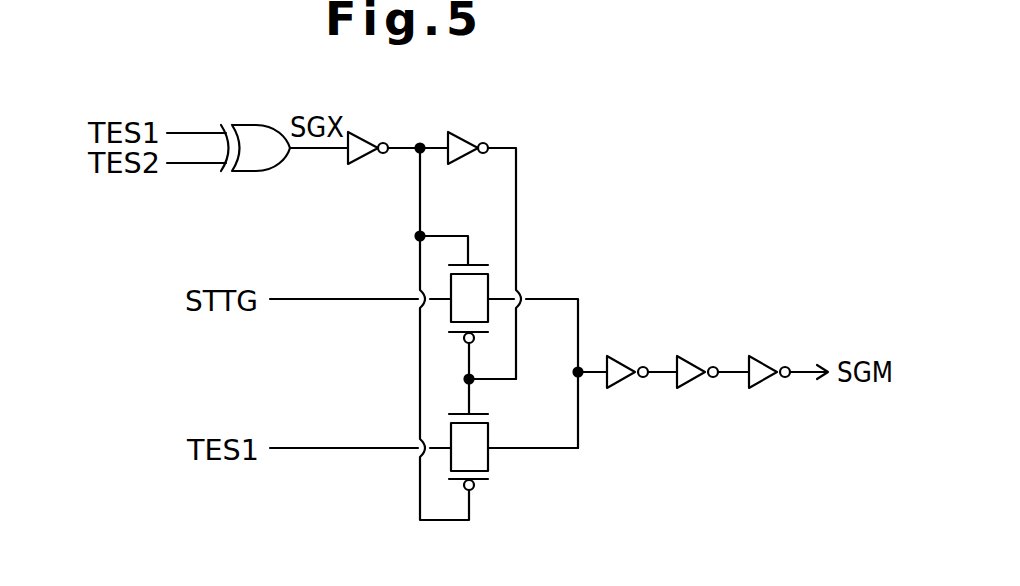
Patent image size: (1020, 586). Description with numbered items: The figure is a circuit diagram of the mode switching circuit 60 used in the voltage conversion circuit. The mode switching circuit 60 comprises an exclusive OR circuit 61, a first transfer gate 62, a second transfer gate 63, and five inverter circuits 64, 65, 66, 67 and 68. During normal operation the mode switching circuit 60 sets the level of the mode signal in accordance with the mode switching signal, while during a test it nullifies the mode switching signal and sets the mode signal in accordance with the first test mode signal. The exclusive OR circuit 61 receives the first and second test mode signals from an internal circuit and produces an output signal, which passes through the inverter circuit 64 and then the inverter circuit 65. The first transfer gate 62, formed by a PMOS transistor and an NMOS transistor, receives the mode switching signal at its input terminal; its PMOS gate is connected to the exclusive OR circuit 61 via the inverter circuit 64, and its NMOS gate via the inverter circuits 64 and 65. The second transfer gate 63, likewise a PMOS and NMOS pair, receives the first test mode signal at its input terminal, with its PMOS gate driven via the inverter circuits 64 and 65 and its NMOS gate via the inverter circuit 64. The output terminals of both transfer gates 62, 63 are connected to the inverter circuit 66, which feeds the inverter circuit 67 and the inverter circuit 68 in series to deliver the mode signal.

The mode switching circuit 60 is at (654, 238).
The exclusive OR circuit 61 is at (254, 173).
The first transfer gate 62 is at (488, 283).
The second transfer gate 63 is at (488, 435).
The inverter circuit 64 is at (364, 160).
The inverter circuit 65 is at (464, 160).
The inverter circuit 66 is at (624, 383).
The inverter circuit 67 is at (694, 383).
The inverter circuit 68 is at (766, 383).